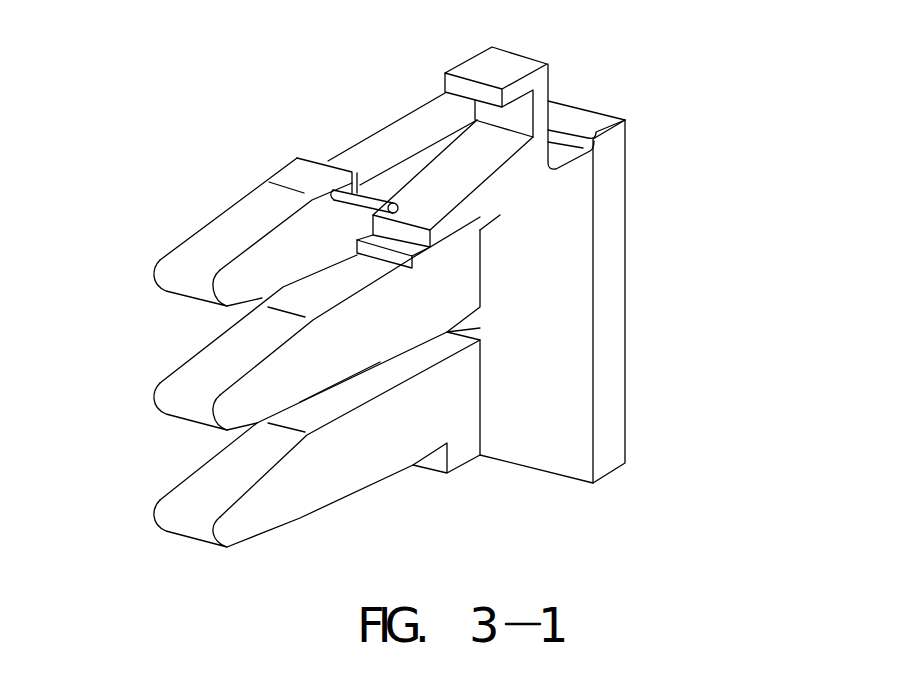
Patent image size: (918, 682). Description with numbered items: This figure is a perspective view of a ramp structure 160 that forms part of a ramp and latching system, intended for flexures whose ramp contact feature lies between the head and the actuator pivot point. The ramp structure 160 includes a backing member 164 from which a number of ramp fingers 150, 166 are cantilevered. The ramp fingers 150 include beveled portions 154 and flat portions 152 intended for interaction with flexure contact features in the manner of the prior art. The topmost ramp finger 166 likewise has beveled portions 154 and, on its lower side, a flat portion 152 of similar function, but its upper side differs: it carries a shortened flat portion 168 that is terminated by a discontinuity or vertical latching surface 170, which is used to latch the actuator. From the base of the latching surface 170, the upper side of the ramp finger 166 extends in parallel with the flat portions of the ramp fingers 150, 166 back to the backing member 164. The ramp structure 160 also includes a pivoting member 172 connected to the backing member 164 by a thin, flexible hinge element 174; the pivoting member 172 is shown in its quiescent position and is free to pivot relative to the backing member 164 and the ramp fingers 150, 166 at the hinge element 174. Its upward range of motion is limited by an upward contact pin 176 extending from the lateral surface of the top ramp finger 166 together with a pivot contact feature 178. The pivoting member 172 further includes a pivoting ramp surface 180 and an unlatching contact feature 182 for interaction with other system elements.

The ramp fingers 150 is at (247, 512).
The flat portion 152 is at (352, 398).
The beveled portion 154 is at (205, 372).
The ramp structure 160 is at (698, 140).
The backing member 164 is at (577, 405).
The topmost ramp finger 166 is at (267, 263).
The shortened flat portion 168 is at (303, 172).
The vertical latching surface 170 is at (317, 162).
The pivoting member 172 is at (513, 190).
The flexible hinge element 174 is at (580, 167).
The upward contact pin 176 is at (370, 207).
The pivot contact feature 178 is at (413, 248).
The pivoting ramp surface 180 is at (465, 157).
The unlatching contact feature 182 is at (540, 115).